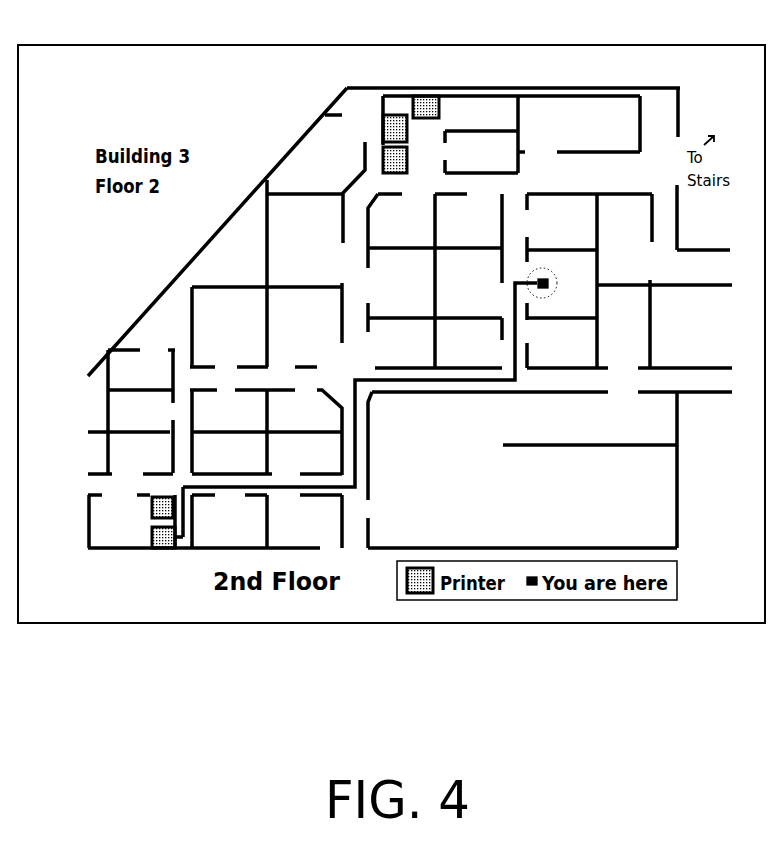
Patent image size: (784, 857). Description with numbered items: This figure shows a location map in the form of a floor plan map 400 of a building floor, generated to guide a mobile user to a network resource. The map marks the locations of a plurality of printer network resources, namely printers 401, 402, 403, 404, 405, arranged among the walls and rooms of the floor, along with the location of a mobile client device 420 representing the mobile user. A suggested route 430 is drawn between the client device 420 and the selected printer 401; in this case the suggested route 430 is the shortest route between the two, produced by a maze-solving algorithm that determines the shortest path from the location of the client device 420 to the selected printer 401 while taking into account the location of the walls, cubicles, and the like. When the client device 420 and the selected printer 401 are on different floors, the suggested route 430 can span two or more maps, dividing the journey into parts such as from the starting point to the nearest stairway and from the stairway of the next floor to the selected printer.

The floor plan map 400 is at (318, 38).
The printer 401 is at (160, 552).
The printer 402 is at (150, 513).
The printer 403 is at (423, 88).
The printer 404 is at (382, 117).
The printer 405 is at (383, 158).
The mobile client device 420 is at (550, 287).
The suggested route 430 is at (377, 367).